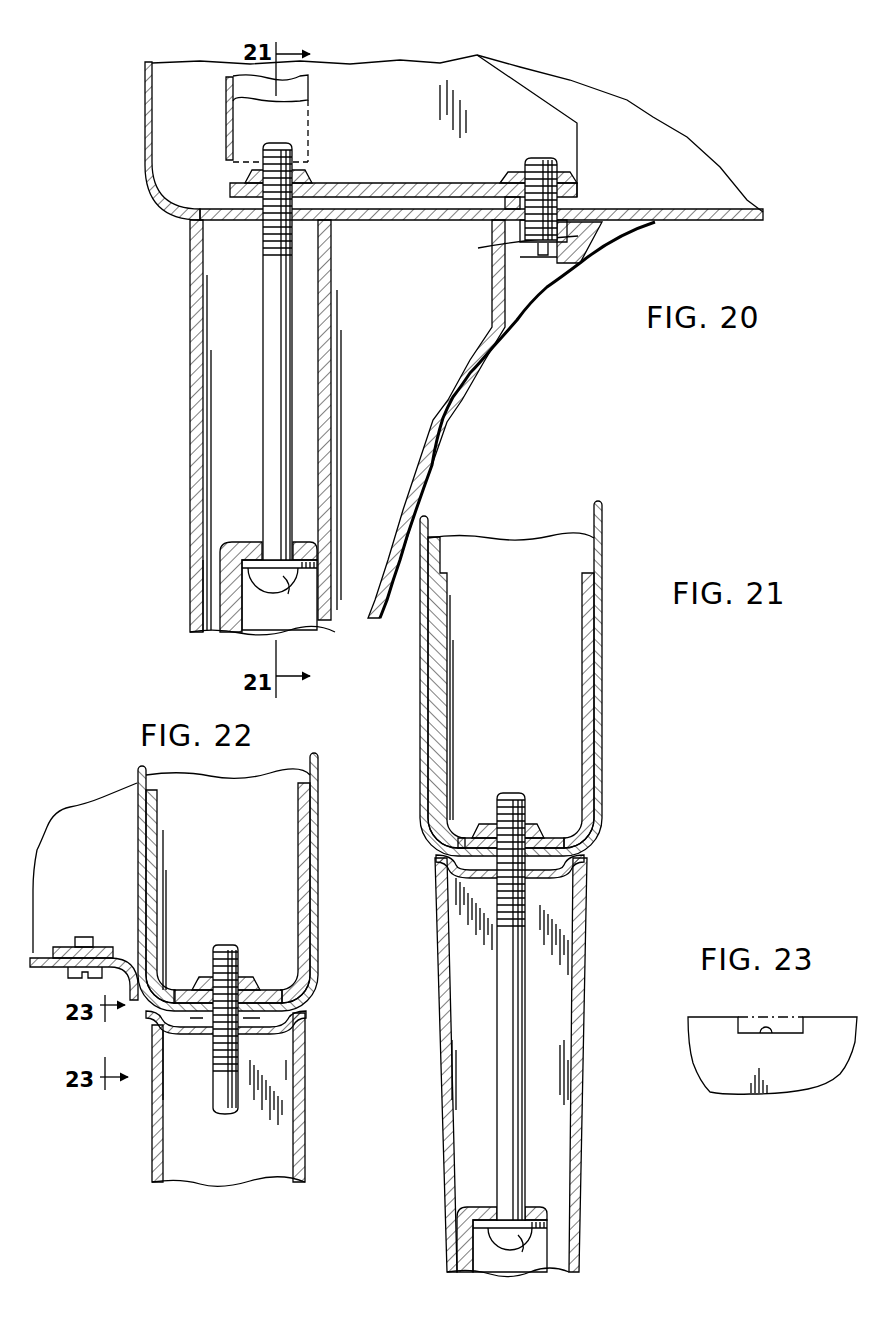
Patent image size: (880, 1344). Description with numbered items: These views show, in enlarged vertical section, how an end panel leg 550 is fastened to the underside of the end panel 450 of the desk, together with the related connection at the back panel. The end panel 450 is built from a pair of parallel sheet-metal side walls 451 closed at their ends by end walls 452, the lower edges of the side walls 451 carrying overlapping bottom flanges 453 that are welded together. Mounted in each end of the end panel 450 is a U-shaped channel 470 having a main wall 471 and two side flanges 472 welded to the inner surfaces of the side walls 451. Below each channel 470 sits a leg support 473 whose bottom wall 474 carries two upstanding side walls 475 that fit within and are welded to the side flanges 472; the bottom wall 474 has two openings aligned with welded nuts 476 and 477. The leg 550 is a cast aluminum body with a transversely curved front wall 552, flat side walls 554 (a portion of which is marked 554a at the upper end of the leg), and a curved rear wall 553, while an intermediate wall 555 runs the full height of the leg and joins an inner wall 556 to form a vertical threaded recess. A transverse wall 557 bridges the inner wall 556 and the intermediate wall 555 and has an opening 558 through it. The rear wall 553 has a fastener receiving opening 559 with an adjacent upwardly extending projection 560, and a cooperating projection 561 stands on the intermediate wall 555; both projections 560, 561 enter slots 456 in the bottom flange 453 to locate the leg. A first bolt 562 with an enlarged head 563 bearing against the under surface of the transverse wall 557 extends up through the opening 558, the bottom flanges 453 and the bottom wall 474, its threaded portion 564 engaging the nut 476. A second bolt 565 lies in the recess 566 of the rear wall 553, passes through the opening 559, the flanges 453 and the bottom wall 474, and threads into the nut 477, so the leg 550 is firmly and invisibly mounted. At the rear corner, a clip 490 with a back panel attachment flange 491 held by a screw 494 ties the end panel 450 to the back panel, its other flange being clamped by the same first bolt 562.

In FIG. 20, the end panel 450 is at (637, 93).
In FIG. 21, the end panel 450 is at (612, 700).
In FIG. 22, the end panel 450 is at (171, 861).
In FIG. 20, the side walls 451 is at (677, 150).
In FIG. 21, the side walls 451 is at (420, 733).
In FIG. 22, the side walls 451 is at (135, 857).
In FIG. 20, the end walls 452 is at (143, 130).
In FIG. 20, the bottom flanges 453 is at (738, 221).
In FIG. 21, the bottom flanges 453 is at (450, 873).
In FIG. 22, the bottom flanges 453 is at (290, 1030).
In FIG. 20, the openings or slots 456 is at (329, 222).
In FIG. 20, the channel 470 is at (225, 108).
In FIG. 21, the channel 470 is at (538, 550).
In FIG. 20, the main wall 471 is at (225, 145).
In FIG. 21, the main wall 471 is at (482, 548).
In FIG. 20, the side flanges 472 is at (303, 91).
In FIG. 21, the side flanges 472 is at (428, 518).
In FIG. 22, the side flanges 472 is at (137, 768).
In FIG. 20, the leg support 473 is at (500, 103).
In FIG. 21, the leg support 473 is at (570, 653).
In FIG. 20, the bottom wall 474 is at (411, 190).
In FIG. 21, the bottom wall 474 is at (580, 843).
In FIG. 22, the bottom wall 474 is at (273, 988).
In FIG. 20, the side walls 475 is at (416, 125).
In FIG. 21, the side walls 475 is at (588, 623).
In FIG. 22, the side walls 475 is at (158, 850).
In FIG. 20, the nut 476 is at (246, 180).
In FIG. 21, the nut 476 is at (493, 823).
In FIG. 22, the nut 476 is at (203, 975).
In FIG. 20, the nut 477 is at (578, 181).
In FIG. 22, the clip 490 is at (181, 1040).
In FIG. 22, the back panel attachment flange 491 is at (60, 950).
In FIG. 22, the screw 494 is at (87, 937).
In FIG. 20, the end panel leg 550 is at (190, 447).
In FIG. 22, the end panel leg 550 is at (143, 1150).
In FIG. 23, the end panel leg 550 is at (692, 1075).
In FIG. 20, the front wall 552 is at (195, 402).
In FIG. 20, the rear wall 553 is at (458, 375).
In FIG. 20, the side walls 554 is at (241, 318).
In FIG. 21, the side walls 554 is at (440, 987).
In FIG. 22, the side walls 554 is at (153, 1177).
In FIG. 23, the side walls 554 is at (732, 1123).
In FIG. 22, the slot in base wall 554a is at (150, 1047).
In FIG. 23, the slot in base wall 554a is at (767, 1032).
In FIG. 20, the intermediate wall 555 is at (326, 406).
In FIG. 21, the intermediate wall 555 is at (490, 966).
In FIG. 20, the inner wall 556 is at (229, 625).
In FIG. 20, the transverse wall 557 is at (235, 560).
In FIG. 21, the transverse wall 557 is at (480, 1210).
In FIG. 20, the opening 558 is at (268, 548).
In FIG. 21, the opening 558 is at (527, 1205).
In FIG. 20, the fastener receiving opening 559 is at (560, 250).
In FIG. 20, the upwardly extending projection 560 is at (505, 203).
In FIG. 20, the cooperating projection 561 is at (326, 197).
In FIG. 21, the cooperating projection 561 is at (458, 857).
In FIG. 20, the first bolt 562 is at (258, 362).
In FIG. 21, the first bolt 562 is at (495, 1033).
In FIG. 22, the first bolt 562 is at (233, 1108).
In FIG. 20, the enlarged head 563 is at (275, 587).
In FIG. 21, the enlarged head 563 is at (493, 1246).
In FIG. 20, the threaded portion 564 is at (267, 238).
In FIG. 21, the threaded portion 564 is at (513, 793).
In FIG. 22, the threaded portion 564 is at (225, 1029).
In FIG. 20, the second bolt 565 is at (532, 252).
In FIG. 20, the recess 566 is at (503, 300).